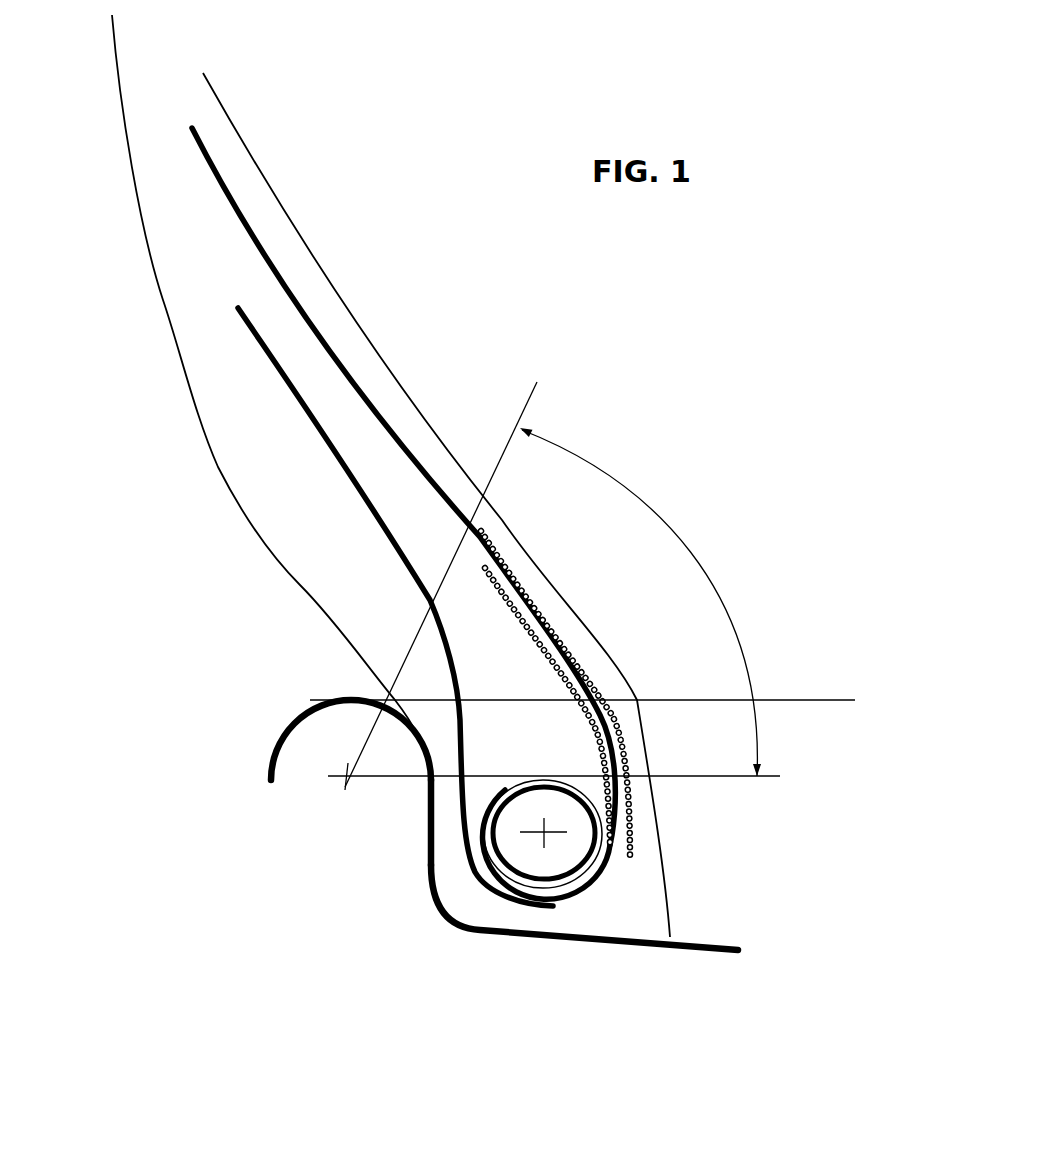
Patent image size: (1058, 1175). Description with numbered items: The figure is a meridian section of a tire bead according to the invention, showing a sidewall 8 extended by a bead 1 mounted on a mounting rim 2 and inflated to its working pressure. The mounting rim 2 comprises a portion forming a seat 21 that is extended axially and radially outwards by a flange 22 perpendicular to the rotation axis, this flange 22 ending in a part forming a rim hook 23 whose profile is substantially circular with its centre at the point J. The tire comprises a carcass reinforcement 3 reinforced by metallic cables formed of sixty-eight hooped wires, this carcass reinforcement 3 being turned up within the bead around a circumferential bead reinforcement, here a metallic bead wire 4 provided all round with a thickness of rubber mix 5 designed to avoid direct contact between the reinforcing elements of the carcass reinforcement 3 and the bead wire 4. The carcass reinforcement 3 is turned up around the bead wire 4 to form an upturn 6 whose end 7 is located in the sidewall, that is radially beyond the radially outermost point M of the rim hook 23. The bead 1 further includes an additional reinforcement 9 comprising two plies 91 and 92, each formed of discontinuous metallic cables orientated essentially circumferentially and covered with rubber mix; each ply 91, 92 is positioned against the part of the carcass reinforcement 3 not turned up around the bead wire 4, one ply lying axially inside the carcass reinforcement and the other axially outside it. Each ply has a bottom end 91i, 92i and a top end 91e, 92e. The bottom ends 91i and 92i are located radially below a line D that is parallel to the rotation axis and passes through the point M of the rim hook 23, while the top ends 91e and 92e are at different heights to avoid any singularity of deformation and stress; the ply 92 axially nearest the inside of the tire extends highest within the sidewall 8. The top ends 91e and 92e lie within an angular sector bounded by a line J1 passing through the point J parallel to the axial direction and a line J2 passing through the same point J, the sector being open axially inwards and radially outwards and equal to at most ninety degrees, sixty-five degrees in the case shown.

The bead 1 is at (638, 896).
The mounting rim 2 is at (479, 857).
The carcass reinforcement 3 is at (370, 403).
The bead wire 4 is at (555, 853).
The thickness of rubber mix 5 is at (478, 860).
The upturn 6 is at (335, 452).
The end of the upturn 7 is at (240, 305).
The sidewall 8 is at (175, 175).
The additional reinforcement 9 is at (490, 744).
The ply 91 is at (560, 684).
The ply 92 is at (562, 637).
The top end of ply 91 91e is at (486, 568).
The top end of ply 92 92e is at (481, 535).
The bottom end of ply 91 91i is at (600, 877).
The bottom end of ply 92 92i is at (633, 855).
The seat 21 is at (518, 932).
The flange 22 is at (428, 835).
The rim hook 23 is at (297, 712).
The line D is at (582, 682).
The line J1 is at (574, 753).
The line J2 is at (456, 567).
The point J is at (331, 782).
The radially outermost point of the rim hook M is at (352, 699).